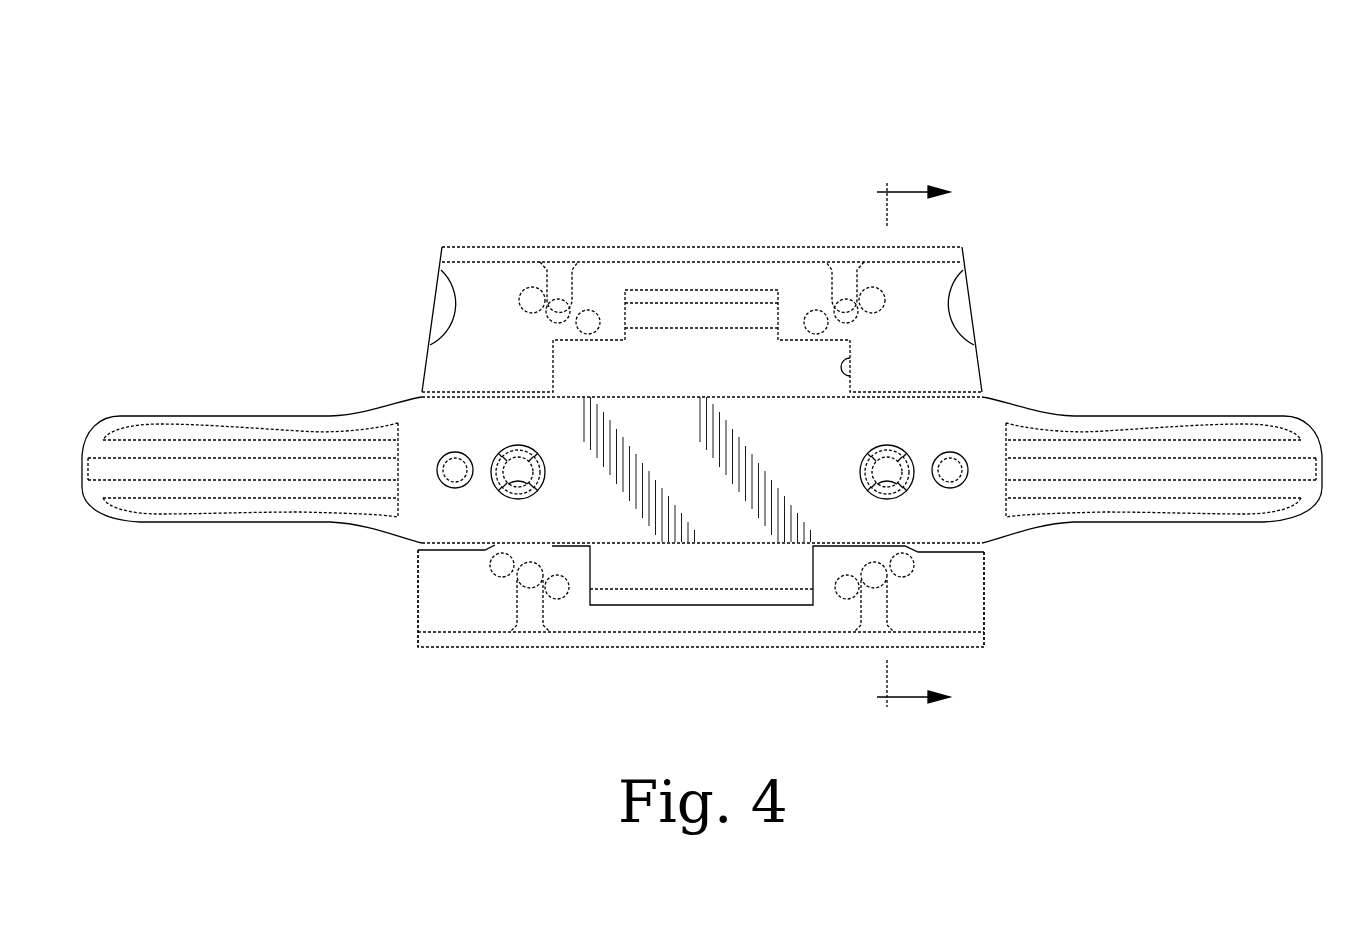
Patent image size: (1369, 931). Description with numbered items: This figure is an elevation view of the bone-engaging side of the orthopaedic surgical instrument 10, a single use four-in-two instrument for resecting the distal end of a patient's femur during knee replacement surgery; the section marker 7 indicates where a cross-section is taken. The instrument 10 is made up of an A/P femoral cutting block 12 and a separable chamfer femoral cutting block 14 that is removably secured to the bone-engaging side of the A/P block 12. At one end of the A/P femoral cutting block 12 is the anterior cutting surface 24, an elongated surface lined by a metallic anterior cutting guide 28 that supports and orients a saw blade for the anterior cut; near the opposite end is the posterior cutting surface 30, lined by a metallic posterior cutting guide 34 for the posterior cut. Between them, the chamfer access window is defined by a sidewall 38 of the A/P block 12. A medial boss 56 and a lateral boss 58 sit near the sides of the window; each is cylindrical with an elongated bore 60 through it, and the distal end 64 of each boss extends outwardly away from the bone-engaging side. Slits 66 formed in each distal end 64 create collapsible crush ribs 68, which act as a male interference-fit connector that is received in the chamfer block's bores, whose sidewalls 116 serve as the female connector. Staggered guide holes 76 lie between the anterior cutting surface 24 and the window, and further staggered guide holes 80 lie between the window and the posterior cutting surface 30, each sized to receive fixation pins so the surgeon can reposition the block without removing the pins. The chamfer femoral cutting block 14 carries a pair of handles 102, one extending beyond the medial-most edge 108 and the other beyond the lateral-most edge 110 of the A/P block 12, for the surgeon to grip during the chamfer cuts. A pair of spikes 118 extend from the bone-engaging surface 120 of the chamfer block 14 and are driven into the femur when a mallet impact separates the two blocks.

The orthopaedic surgical instrument 10 is at (1072, 133).
The A/P femoral cutting block 12 is at (975, 372).
The chamfer femoral cutting block 14 is at (1100, 523).
The anterior cutting surface 24 is at (700, 258).
The anterior cutting guide 28 is at (592, 252).
The posterior cutting surface 30 is at (588, 634).
The posterior cutting guide 34 is at (480, 638).
The sidewall 38 is at (859, 367).
The medial boss 56 is at (860, 486).
The lateral boss 58 is at (544, 486).
The elongated bore 60 is at (521, 498).
The distal end 64 is at (516, 447).
The slits 66 is at (534, 455).
The crush ribs 68 is at (497, 490).
The guide holes 76 is at (520, 302).
The guide holes 80 is at (492, 574).
The handles 102 is at (255, 522).
The medial-most edge 108 is at (985, 580).
The lateral-most edge 110 is at (418, 575).
The sidewalls 116 is at (546, 470).
The spikes 118 is at (455, 468).
The bone-engaging surface 120 is at (682, 397).
The section line 7- 7 is at (904, 445).